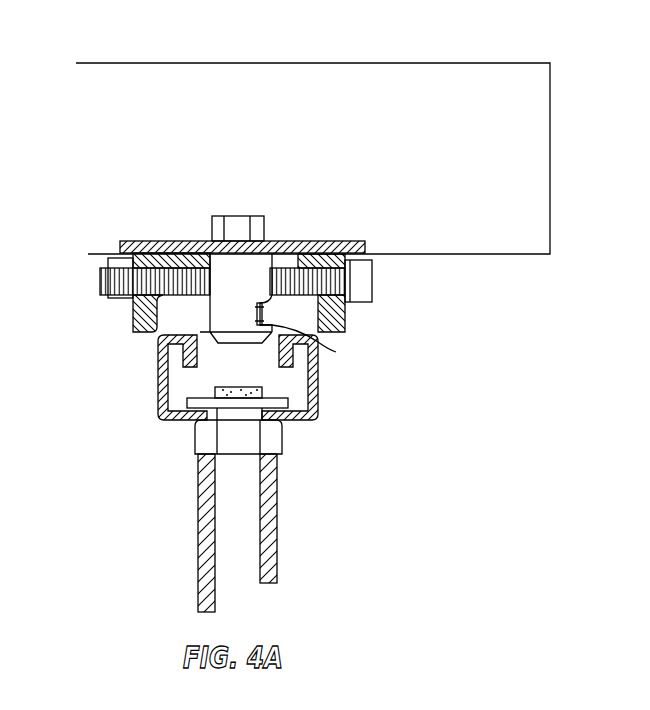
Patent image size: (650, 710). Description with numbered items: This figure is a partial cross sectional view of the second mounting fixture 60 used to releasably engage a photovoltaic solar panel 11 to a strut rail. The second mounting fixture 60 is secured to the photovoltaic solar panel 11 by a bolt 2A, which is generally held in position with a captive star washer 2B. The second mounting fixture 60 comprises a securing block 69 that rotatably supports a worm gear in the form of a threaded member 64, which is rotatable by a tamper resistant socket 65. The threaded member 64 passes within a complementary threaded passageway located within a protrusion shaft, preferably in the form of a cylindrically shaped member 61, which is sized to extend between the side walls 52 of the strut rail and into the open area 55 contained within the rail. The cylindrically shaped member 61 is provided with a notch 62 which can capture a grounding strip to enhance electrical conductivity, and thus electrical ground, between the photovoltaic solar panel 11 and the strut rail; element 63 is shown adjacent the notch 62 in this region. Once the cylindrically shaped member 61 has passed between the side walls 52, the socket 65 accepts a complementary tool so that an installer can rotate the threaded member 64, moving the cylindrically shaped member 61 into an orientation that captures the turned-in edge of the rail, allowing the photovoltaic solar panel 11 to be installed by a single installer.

The photovoltaic solar panel 11 is at (281, 73).
The bolt 2A is at (238, 216).
The captive star washer 2B is at (264, 241).
The threaded member 64 is at (100, 283).
The second mounting fixture 60 is at (106, 321).
The cylindrically shaped member 61 is at (252, 293).
The notch 62 is at (264, 314).
The spring hook 63 is at (336, 352).
The tamper resistant socket 65 is at (372, 281).
The securing block 69 is at (346, 318).
The open area 55 is at (252, 375).
The side walls 52 is at (322, 367).